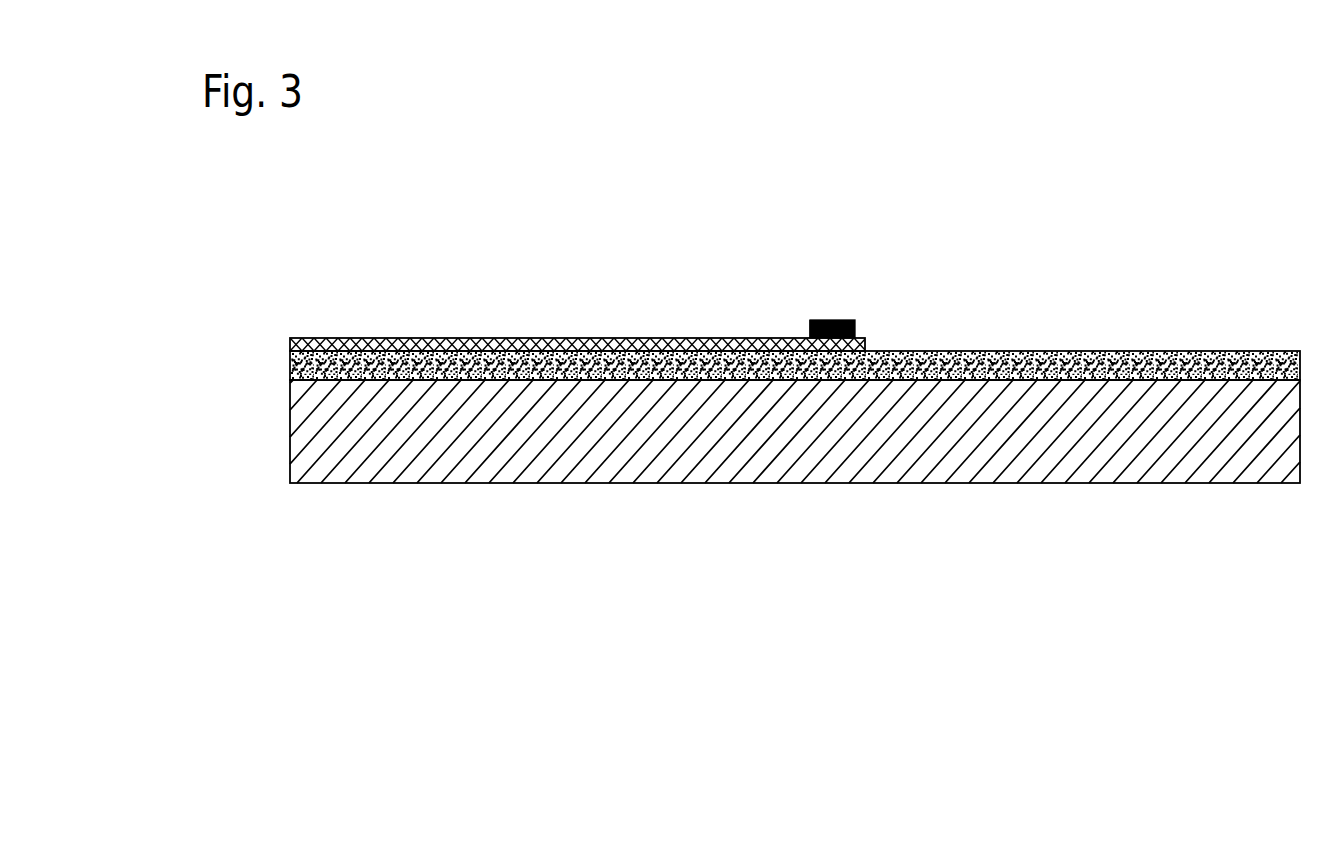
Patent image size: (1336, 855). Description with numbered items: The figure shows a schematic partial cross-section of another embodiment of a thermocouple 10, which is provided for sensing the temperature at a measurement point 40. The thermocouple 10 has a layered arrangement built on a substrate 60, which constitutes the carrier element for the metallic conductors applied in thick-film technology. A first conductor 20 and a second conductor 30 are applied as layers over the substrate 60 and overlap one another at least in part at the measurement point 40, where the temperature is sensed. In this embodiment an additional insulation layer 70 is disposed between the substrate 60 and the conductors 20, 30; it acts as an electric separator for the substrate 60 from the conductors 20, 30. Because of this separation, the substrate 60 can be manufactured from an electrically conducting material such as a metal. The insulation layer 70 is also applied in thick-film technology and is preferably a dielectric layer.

The thermocouple 10 is at (1095, 222).
The first conductor 20 is at (448, 334).
The second conductor 30 is at (807, 313).
The measurement point 40 is at (846, 312).
The substrate 60 is at (287, 427).
The insulation layer 70 is at (286, 361).